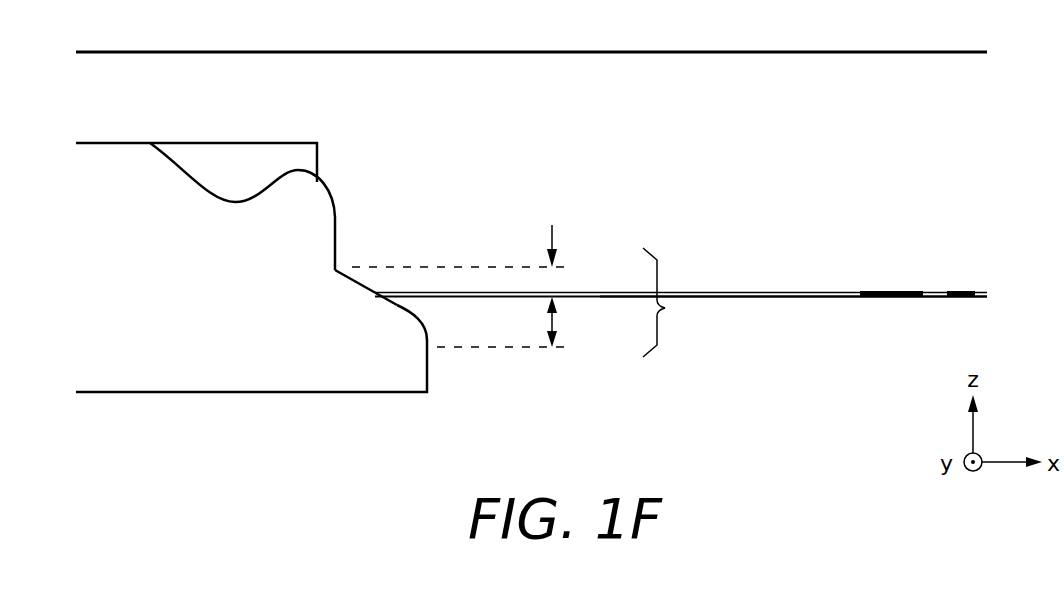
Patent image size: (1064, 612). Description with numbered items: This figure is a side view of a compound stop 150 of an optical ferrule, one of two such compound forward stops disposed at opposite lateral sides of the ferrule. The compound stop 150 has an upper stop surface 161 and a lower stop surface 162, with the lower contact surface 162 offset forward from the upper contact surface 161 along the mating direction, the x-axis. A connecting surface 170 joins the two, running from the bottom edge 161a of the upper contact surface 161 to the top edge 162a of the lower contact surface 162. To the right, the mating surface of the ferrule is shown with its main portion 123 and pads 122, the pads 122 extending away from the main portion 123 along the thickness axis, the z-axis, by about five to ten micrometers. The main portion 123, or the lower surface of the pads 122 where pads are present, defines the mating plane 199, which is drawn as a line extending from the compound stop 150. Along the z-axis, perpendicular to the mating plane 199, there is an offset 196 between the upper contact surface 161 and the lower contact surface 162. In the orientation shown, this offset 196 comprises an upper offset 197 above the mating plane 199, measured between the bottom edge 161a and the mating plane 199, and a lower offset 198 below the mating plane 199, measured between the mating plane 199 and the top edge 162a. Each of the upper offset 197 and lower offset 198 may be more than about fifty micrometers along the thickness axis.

The pads 122 is at (892, 297).
The main portion 123 is at (820, 297).
The compound stop 150 is at (422, 255).
The upper stop surface 161 is at (335, 237).
The bottom edge of the upper contact surface 161a is at (335, 268).
The lower stop surface 162 is at (430, 368).
The top edge of the lower contact surface 162a is at (430, 350).
The connecting surface 170 is at (398, 303).
The offset 196 is at (665, 308).
The upper offset 197 is at (554, 232).
The lower offset 198 is at (556, 320).
The mating plane 199 is at (753, 297).